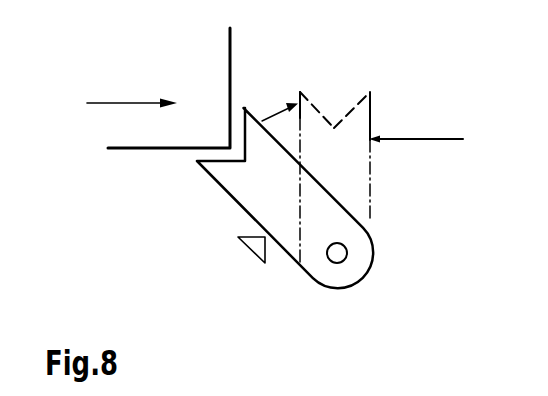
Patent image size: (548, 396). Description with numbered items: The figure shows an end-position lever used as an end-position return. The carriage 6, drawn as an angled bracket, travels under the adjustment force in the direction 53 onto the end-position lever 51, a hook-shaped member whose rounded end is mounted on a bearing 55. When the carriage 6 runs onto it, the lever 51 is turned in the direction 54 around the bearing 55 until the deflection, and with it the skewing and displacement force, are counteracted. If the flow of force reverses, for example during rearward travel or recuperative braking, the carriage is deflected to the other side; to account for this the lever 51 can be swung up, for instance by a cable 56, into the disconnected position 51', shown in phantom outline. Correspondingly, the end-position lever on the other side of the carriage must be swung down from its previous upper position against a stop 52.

The carriage 6 is at (145, 127).
The end-position lever 51 is at (265, 198).
The end-position lever in swung-up position 51' is at (396, 177).
The stop 52 is at (258, 245).
The direction of adjustment force 53 is at (126, 102).
The turning direction of lever 54 is at (268, 118).
The bearing 55 is at (339, 254).
The cable 56 is at (438, 138).